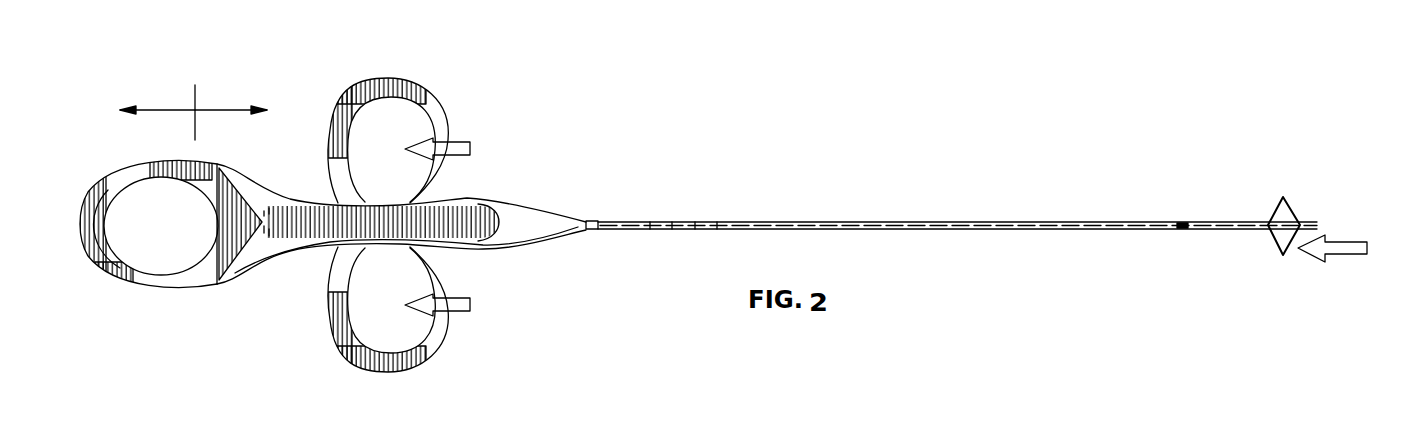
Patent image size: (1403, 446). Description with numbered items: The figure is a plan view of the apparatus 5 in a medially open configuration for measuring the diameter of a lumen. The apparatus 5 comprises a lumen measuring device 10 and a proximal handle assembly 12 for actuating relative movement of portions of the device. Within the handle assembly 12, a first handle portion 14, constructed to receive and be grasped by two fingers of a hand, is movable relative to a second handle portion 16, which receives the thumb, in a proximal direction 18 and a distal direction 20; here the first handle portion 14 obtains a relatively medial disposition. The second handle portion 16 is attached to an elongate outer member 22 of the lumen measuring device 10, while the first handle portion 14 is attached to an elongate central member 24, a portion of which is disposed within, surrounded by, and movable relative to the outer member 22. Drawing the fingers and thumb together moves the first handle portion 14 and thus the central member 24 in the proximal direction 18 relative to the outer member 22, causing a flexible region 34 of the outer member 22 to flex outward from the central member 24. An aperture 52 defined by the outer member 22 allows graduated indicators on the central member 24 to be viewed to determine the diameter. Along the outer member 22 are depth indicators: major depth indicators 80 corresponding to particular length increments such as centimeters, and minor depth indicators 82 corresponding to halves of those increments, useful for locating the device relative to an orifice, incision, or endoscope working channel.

The apparatus 5 is at (606, 52).
The lumen measuring device 10 is at (1317, 203).
The proximal handle assembly 12 is at (598, 75).
The first handle portion 14 is at (428, 118).
The second handle portion 16 is at (236, 182).
The proximal direction 18 is at (172, 110).
The distal direction 20 is at (220, 110).
The elongate outer member 22 is at (788, 222).
The elongate central member 24 is at (1284, 231).
The flexible region 34 is at (1300, 200).
The aperture 52 is at (1180, 230).
The major depth indicators 80 is at (658, 232).
The minor depth indicators 82 is at (680, 232).